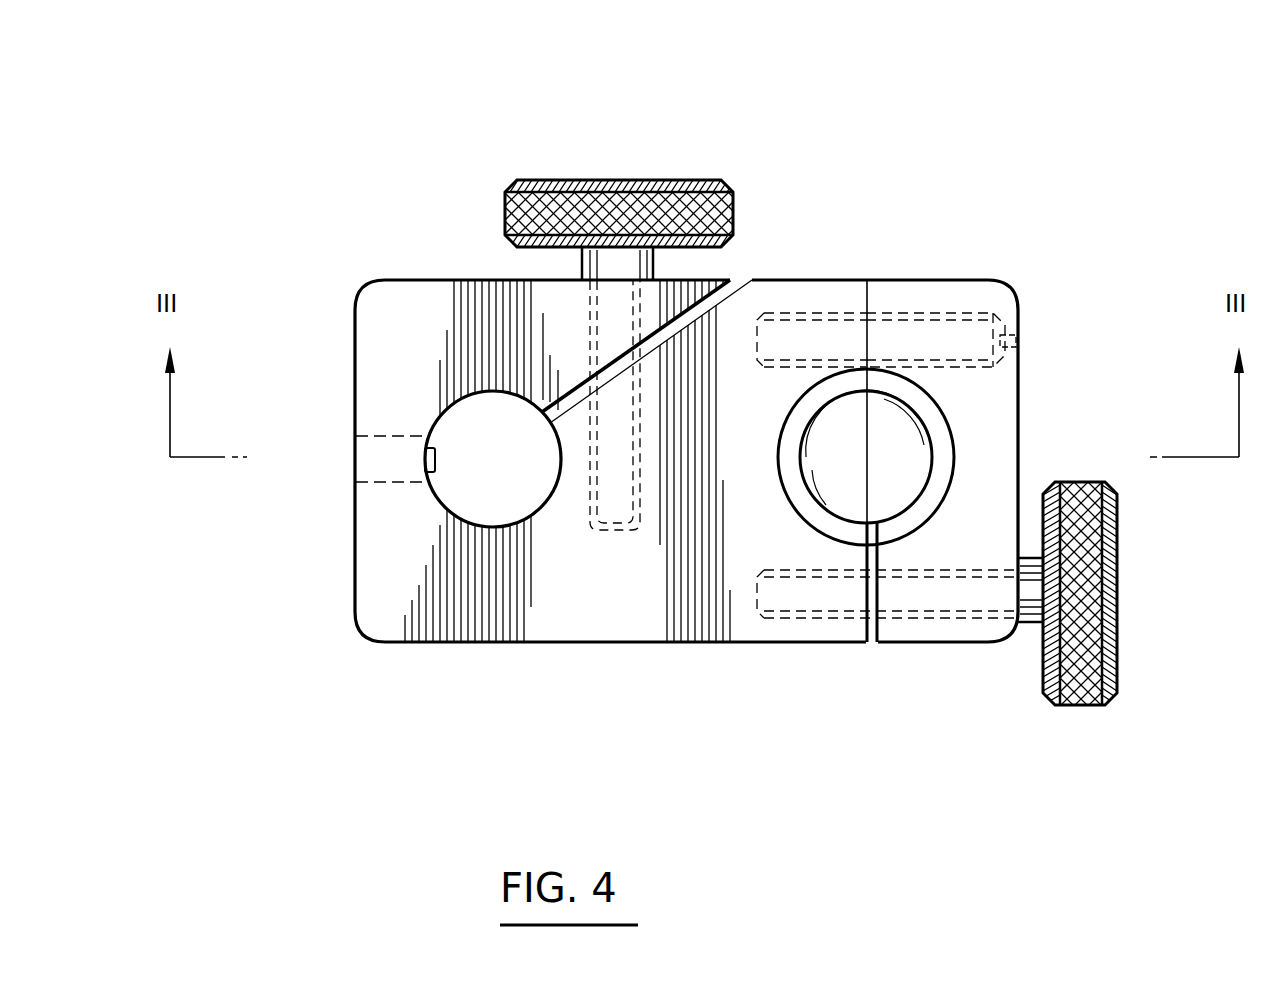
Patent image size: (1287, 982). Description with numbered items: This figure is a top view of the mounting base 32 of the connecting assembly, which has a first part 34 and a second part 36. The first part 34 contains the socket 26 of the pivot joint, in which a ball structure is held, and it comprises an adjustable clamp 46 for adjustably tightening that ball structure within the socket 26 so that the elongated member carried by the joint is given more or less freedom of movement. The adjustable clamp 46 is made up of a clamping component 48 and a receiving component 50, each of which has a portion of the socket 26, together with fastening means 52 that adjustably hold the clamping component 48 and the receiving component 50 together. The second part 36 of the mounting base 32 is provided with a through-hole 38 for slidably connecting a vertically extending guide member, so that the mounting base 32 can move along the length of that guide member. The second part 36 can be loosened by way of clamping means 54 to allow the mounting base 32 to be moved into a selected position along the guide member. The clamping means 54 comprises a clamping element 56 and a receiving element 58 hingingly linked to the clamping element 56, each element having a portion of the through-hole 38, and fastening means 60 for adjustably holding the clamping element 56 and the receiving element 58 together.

The socket 26 is at (912, 458).
The mounting base 32 is at (935, 102).
The first part 34 is at (1108, 340).
The second part 36 is at (330, 447).
The through-hole 38 is at (440, 490).
The adjustable clamp 46 is at (867, 645).
The clamping component 48 is at (920, 290).
The receiving component 50 is at (836, 290).
The fastening means 52 is at (1118, 547).
The clamping means 54 is at (430, 232).
The clamping element 56 is at (422, 280).
The receiving element 58 is at (460, 635).
The fastening means 60 is at (623, 180).